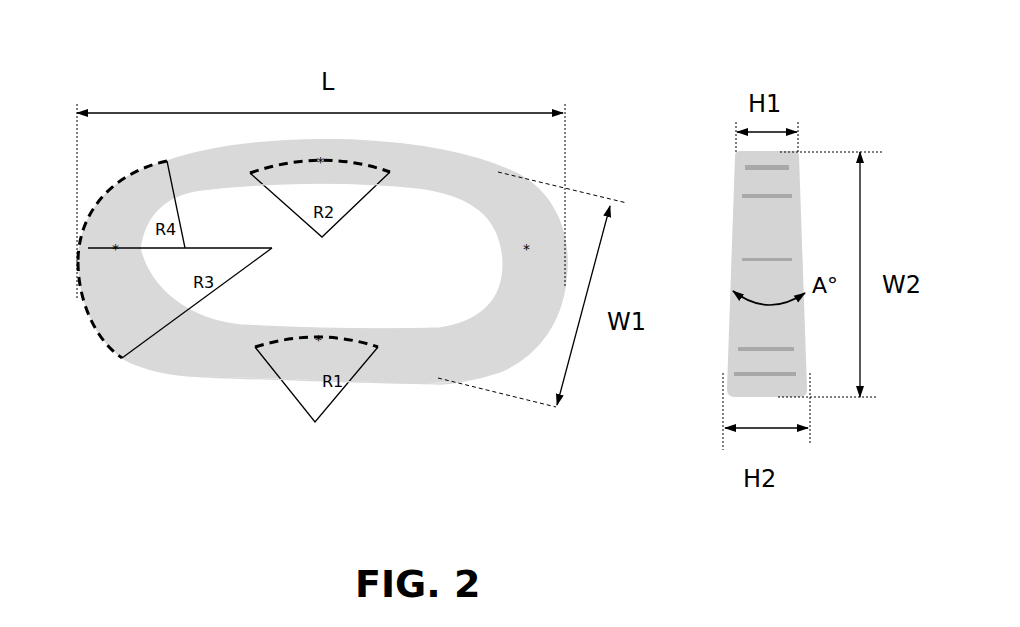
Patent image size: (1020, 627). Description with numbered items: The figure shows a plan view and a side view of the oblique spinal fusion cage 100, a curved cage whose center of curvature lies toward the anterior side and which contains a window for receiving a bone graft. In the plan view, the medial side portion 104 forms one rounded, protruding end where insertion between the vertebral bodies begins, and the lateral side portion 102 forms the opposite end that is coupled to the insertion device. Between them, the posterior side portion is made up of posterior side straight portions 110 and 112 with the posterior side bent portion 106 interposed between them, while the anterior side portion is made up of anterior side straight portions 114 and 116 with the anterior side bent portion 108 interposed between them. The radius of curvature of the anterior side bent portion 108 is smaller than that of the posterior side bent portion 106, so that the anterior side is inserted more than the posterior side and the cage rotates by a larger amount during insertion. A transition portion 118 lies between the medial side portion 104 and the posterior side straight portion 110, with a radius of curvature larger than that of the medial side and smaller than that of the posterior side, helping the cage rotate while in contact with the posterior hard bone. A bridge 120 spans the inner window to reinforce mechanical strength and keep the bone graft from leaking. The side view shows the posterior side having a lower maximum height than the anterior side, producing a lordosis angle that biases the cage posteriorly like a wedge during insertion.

The oblique spinal fusion cage 100 is at (126, 48).
The lateral side portion 102 is at (562, 327).
The medial side portion 104 is at (64, 343).
The posterior side bent portion 106 is at (340, 143).
The anterior side bent portion 108 is at (320, 340).
The posterior side straight portion 110 is at (258, 114).
The posterior side straight portion 112 is at (437, 118).
The anterior side straight portion 114 is at (211, 437).
The anterior side straight portion 116 is at (400, 433).
The transition portion 118 is at (94, 204).
The bridge 120 is at (321, 256).